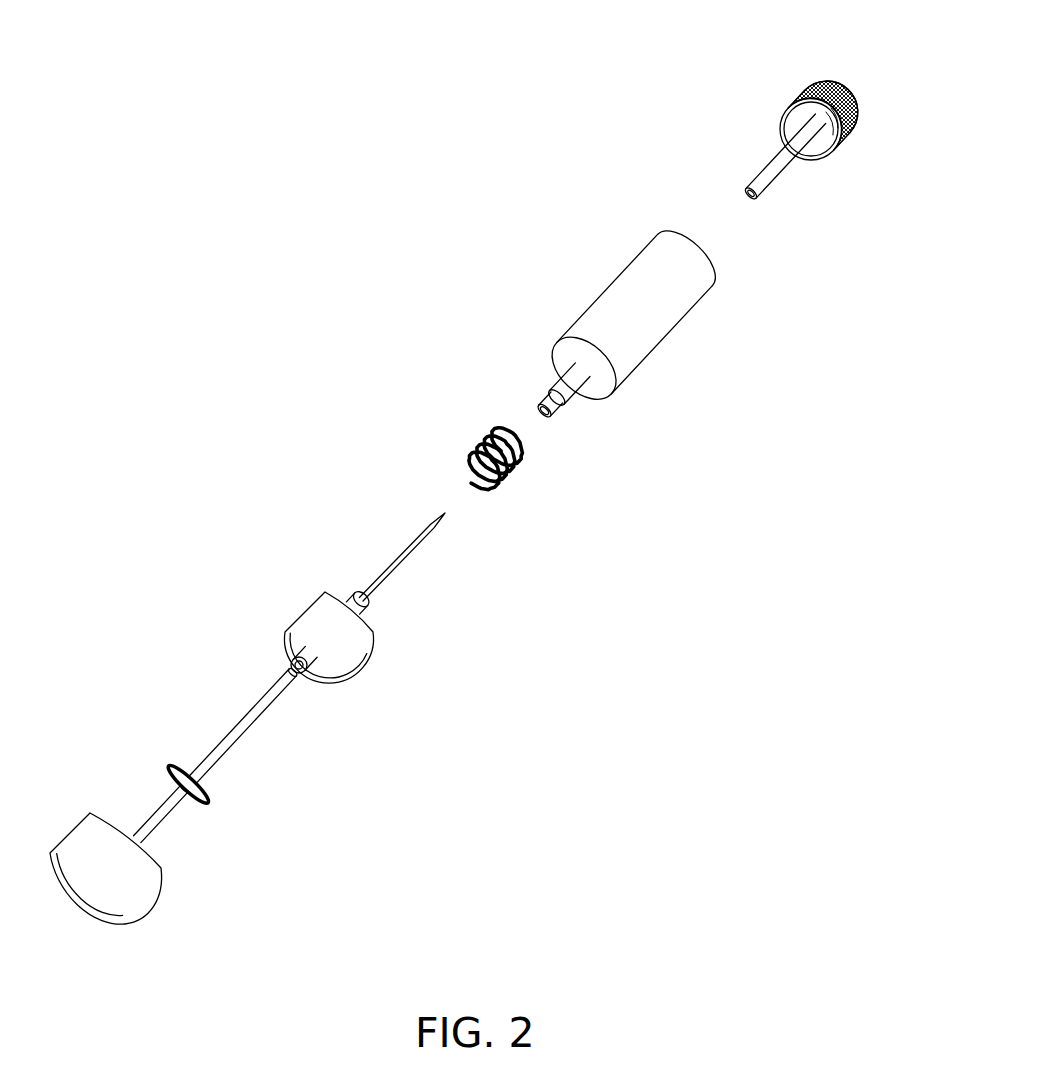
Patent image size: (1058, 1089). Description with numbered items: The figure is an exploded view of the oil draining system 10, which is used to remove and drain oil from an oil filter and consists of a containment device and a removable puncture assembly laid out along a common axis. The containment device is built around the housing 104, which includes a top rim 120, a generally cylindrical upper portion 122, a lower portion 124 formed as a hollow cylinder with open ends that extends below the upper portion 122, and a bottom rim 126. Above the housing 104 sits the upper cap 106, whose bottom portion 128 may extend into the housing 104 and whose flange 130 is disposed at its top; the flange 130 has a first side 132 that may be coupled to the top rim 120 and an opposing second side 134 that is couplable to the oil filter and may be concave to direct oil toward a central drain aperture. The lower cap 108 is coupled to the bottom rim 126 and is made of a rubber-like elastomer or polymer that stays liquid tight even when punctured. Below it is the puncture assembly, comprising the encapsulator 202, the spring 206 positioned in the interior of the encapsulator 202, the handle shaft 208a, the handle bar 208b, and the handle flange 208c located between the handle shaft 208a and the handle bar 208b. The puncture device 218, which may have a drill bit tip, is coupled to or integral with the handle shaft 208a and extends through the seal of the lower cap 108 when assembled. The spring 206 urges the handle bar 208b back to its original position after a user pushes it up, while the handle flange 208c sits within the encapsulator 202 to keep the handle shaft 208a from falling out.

The oil draining system 10 is at (460, 224).
The housing 104 is at (610, 280).
The upper cap 106 is at (775, 96).
The lower cap 108 is at (550, 418).
The top rim 120 is at (714, 258).
The upper portion 122 is at (711, 317).
The lower portion 124 is at (583, 406).
The bottom rim 126 is at (532, 392).
The bottom portion 128 is at (762, 168).
The flange 130 is at (857, 118).
The first side 132 is at (822, 147).
The second side 134 is at (849, 72).
The encapsulator 202 is at (302, 612).
The spring 206 is at (512, 480).
The handle shaft 208a is at (236, 733).
The handle bar 208b is at (150, 900).
The handle flange 208c is at (168, 767).
The puncture device 218 is at (388, 574).